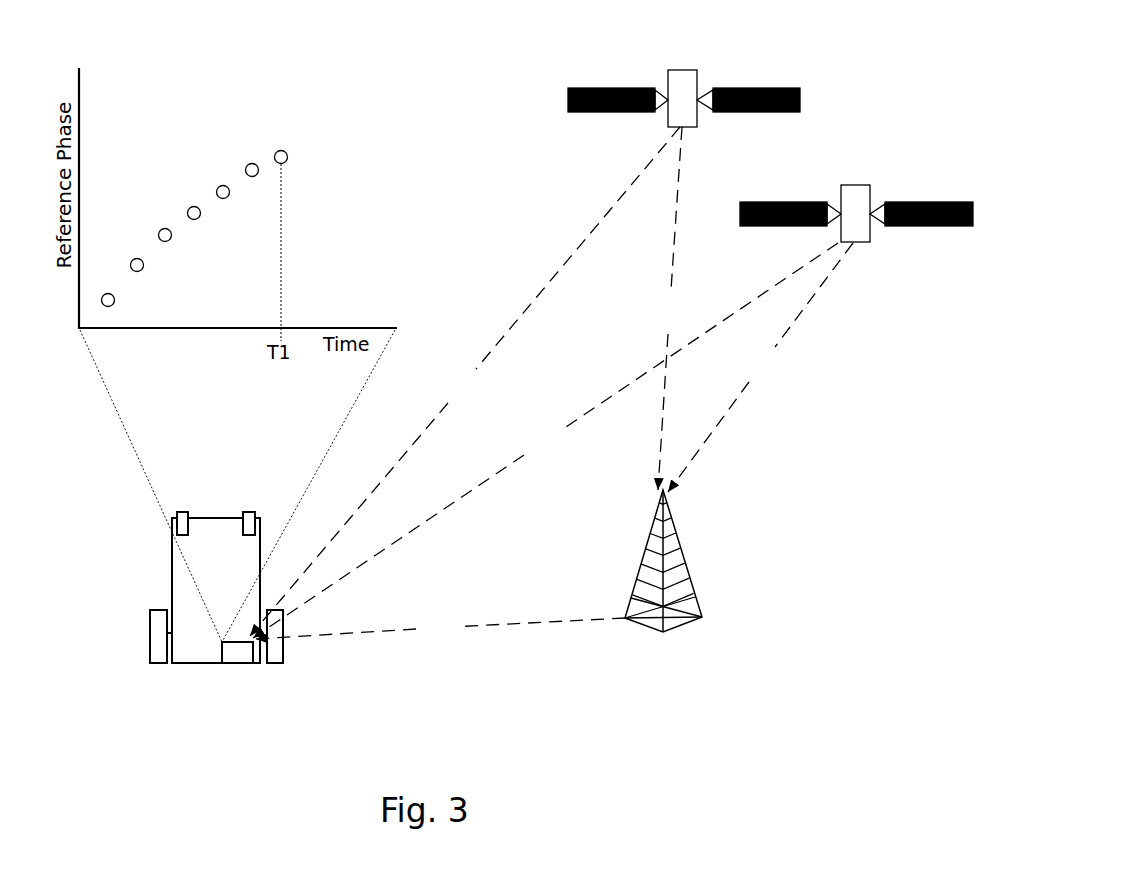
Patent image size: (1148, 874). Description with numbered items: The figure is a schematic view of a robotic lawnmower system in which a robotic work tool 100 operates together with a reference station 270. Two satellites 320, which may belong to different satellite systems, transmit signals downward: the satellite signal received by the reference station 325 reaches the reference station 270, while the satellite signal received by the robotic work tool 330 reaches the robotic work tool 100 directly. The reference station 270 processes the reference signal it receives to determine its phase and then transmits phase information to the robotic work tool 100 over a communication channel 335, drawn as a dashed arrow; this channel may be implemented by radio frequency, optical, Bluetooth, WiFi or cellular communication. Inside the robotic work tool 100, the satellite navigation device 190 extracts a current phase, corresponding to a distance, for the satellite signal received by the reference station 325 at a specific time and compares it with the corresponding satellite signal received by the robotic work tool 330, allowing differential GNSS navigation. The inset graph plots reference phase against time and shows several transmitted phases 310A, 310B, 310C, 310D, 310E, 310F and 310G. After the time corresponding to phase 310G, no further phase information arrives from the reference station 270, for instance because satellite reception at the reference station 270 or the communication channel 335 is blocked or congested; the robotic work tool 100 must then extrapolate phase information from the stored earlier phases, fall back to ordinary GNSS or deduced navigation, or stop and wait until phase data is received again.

The robotic work tool 100 is at (150, 662).
The satellite navigation device 190 is at (222, 663).
The reference station 270 is at (655, 537).
The phase 310A is at (114, 303).
The phase 310B is at (143, 268).
The phase 310C is at (171, 237).
The phase 310D is at (190, 208).
The phase 310E is at (219, 187).
The phase 310F is at (248, 164).
The phase 310G is at (281, 150).
The satellite 320 is at (583, 111).
The satellite signal received by the reference station 325 is at (754, 309).
The satellite signal received by the robotic work tool 330 is at (544, 382).
The communication channel 335 is at (440, 628).